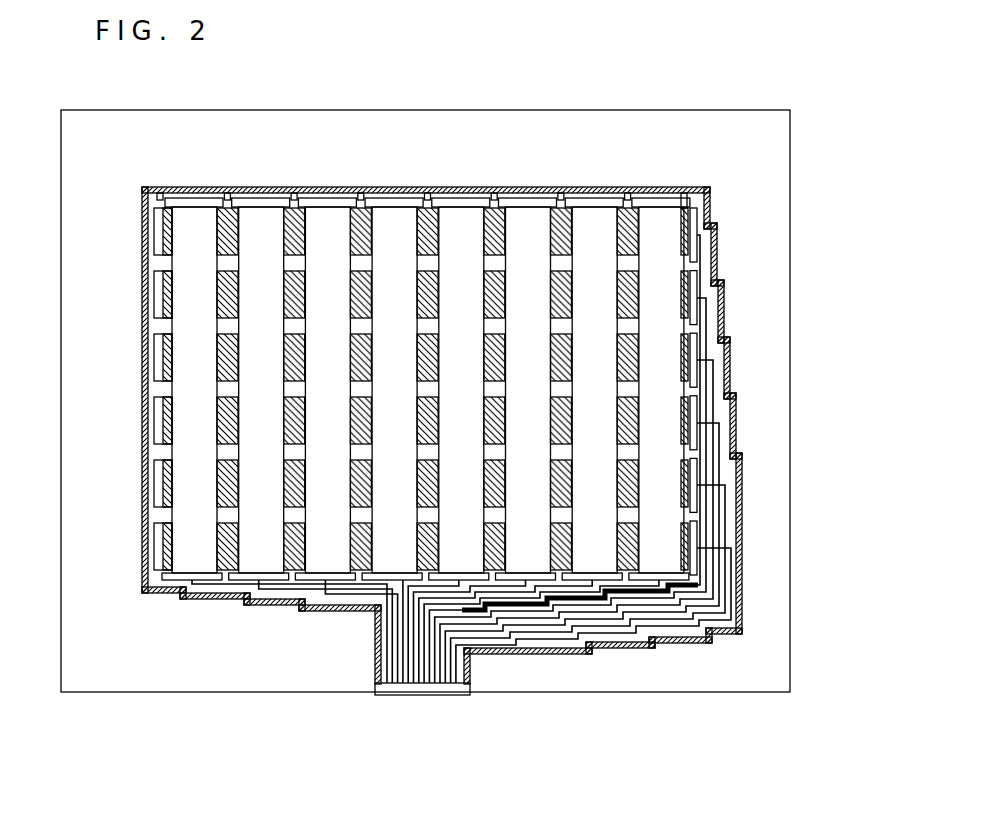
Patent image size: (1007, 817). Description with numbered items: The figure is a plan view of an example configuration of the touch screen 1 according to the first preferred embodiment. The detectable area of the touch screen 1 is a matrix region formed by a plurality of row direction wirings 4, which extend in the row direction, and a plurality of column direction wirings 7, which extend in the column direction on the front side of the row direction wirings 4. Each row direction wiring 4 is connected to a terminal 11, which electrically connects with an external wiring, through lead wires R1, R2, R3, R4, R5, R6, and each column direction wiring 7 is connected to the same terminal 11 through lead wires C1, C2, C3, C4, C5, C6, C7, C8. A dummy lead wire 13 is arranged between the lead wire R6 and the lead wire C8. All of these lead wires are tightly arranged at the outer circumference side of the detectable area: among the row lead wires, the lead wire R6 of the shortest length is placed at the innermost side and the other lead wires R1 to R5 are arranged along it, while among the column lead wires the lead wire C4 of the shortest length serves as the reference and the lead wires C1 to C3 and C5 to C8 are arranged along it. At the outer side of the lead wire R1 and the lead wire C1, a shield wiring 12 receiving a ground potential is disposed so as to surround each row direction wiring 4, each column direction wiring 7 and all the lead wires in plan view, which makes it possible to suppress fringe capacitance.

The touch screen 1 is at (90, 86).
The row direction wiring 4 is at (143, 355).
The column direction wiring 7 is at (261, 216).
The terminal 11 is at (425, 688).
The shield wiring 12 is at (738, 640).
The dummy lead wire 13 is at (655, 600).
The lead wire C1 is at (205, 594).
The lead wire C2 is at (265, 597).
The lead wire C3 is at (327, 603).
The lead wire C4 is at (405, 608).
The lead wire C5 is at (410, 622).
The lead wire C6 is at (415, 638).
The lead wire C7 is at (423, 657).
The lead wire C8 is at (440, 650).
The lead wire R1 is at (702, 238).
The lead wire R2 is at (708, 312).
The lead wire R3 is at (714, 376).
The lead wire R4 is at (720, 440).
The lead wire R5 is at (726, 498).
The lead wire R6 is at (733, 560).